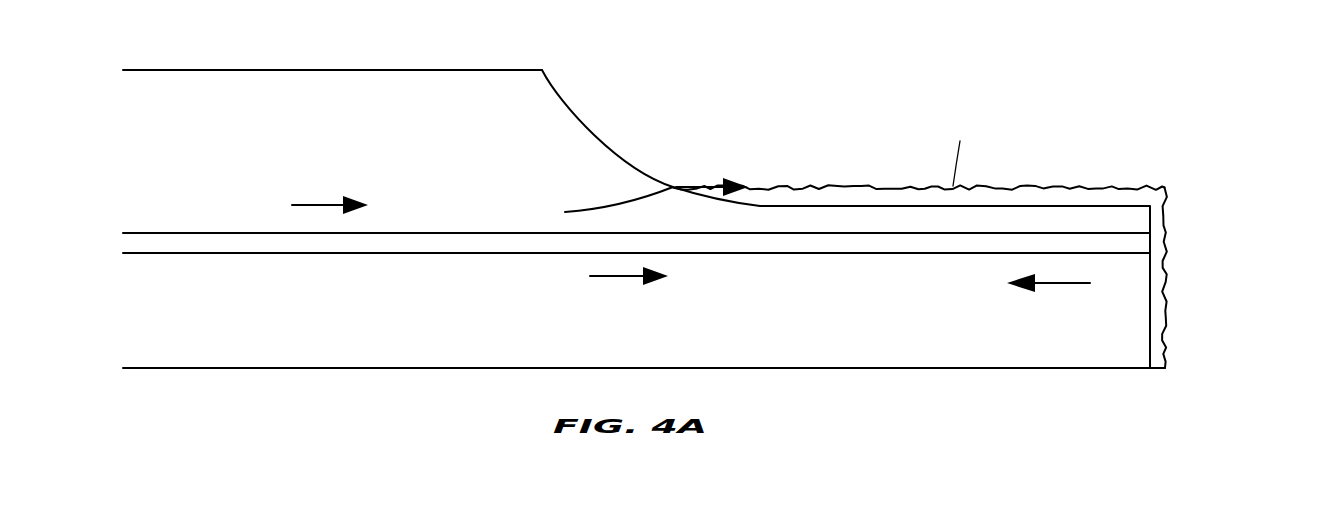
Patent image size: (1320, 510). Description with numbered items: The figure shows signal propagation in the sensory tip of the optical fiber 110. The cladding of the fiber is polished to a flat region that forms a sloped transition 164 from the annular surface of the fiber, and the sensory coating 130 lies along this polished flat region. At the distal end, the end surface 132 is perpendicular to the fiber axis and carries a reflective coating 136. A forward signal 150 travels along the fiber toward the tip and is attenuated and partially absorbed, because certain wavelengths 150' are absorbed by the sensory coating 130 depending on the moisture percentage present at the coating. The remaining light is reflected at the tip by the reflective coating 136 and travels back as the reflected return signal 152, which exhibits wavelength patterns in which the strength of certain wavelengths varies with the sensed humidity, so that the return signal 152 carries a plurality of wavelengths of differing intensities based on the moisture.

The optical fiber 110 is at (325, 70).
The sloped transition 164 is at (585, 126).
The sensory coating 130 is at (838, 186).
The end surface 132 is at (1167, 243).
The reflective coating 136 is at (1200, 295).
The forward signal 150 is at (329, 172).
The absorbed wavelengths 150' is at (636, 183).
The reflected return signal 152 is at (1058, 285).